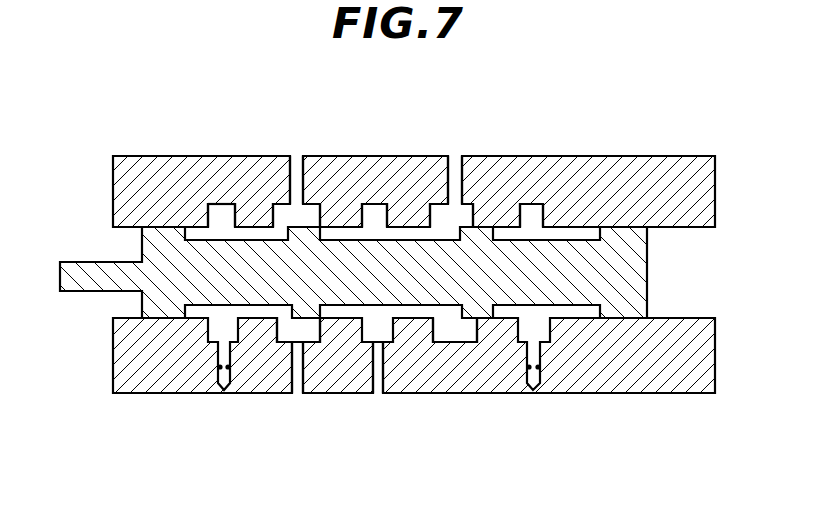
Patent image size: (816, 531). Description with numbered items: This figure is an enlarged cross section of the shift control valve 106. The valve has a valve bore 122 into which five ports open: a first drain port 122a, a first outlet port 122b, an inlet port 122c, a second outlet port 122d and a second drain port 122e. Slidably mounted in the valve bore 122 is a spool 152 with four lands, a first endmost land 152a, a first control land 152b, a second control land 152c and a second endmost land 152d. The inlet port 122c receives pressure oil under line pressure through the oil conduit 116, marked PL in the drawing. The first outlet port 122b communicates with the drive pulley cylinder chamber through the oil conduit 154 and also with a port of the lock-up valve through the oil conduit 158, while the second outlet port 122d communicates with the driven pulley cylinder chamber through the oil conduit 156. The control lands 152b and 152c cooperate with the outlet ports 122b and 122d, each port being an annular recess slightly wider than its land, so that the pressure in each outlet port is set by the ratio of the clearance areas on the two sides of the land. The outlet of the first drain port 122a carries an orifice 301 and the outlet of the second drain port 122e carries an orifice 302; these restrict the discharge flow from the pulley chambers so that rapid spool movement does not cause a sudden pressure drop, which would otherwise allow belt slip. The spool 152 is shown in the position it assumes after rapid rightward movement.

The shift control valve 106 is at (546, 152).
The valve bore 122 is at (200, 228).
The first drain port 122a is at (222, 206).
The first outlet port 122b is at (284, 210).
The inlet port 122c is at (380, 212).
The second outlet port 122d is at (466, 208).
The second drain port 122e is at (538, 208).
The oil conduit 154 is at (304, 190).
The oil conduit 156 is at (440, 166).
The spool 152 is at (200, 300).
The first endmost land 152a is at (168, 312).
The first control land 152b is at (296, 320).
The second control land 152c is at (477, 306).
The second endmost land 152d is at (627, 306).
The oil conduit 158 is at (305, 366).
The oil conduit 116 is at (384, 366).
The orifice 301 is at (222, 386).
The orifice 302 is at (537, 386).
The parting line PL is at (374, 364).